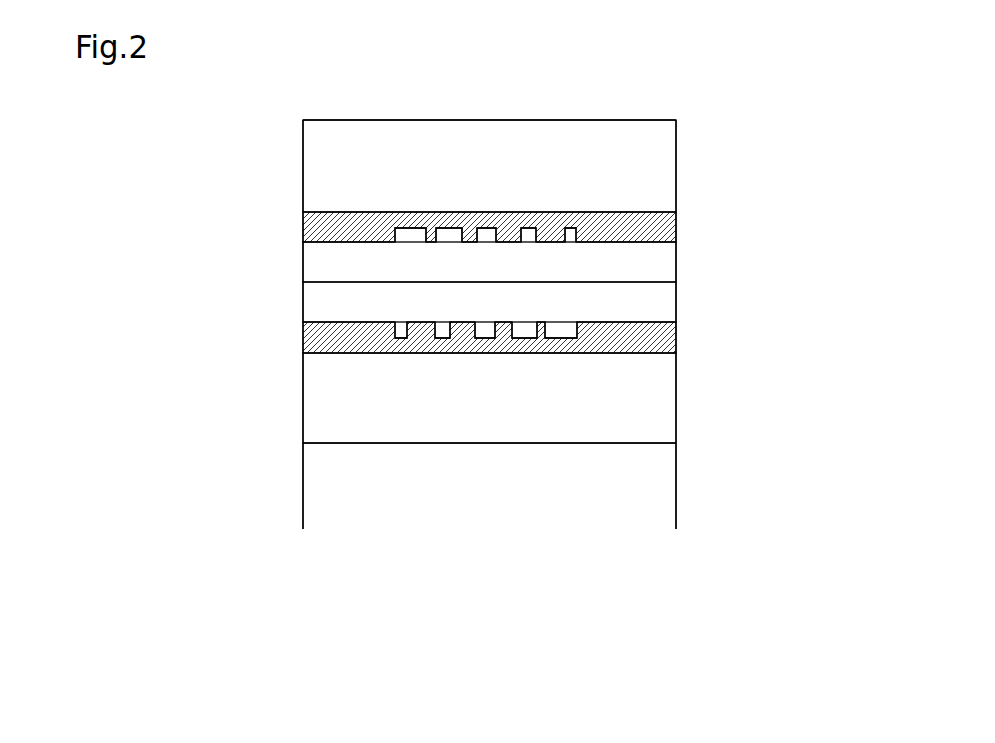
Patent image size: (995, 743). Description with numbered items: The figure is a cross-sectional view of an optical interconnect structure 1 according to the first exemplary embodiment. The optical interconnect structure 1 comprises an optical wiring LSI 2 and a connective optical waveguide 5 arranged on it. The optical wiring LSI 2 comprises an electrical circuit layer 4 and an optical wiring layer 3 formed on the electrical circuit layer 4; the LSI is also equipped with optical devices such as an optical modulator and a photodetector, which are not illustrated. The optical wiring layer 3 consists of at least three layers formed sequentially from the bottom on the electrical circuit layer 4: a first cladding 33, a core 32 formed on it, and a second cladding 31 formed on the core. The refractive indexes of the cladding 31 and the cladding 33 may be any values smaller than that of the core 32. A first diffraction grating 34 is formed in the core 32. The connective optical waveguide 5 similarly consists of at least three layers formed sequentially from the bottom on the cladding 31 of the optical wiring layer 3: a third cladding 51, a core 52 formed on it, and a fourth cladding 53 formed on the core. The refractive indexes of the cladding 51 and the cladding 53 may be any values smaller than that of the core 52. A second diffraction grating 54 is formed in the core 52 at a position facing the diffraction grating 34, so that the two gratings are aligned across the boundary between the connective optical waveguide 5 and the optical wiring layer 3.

The optical interconnect structure 1 is at (772, 565).
The optical wiring LSI 2 is at (157, 543).
The optical wiring layer 3 is at (297, 435).
The electrical circuit layer 4 is at (297, 545).
The connective optical waveguide 5 is at (297, 126).
The cladding 31 is at (665, 305).
The core 32 is at (675, 334).
The cladding 33 is at (665, 375).
The diffraction grating 34 is at (580, 353).
The cladding 51 is at (667, 262).
The core 52 is at (668, 226).
The cladding 53 is at (665, 162).
The diffraction grating 54 is at (593, 213).